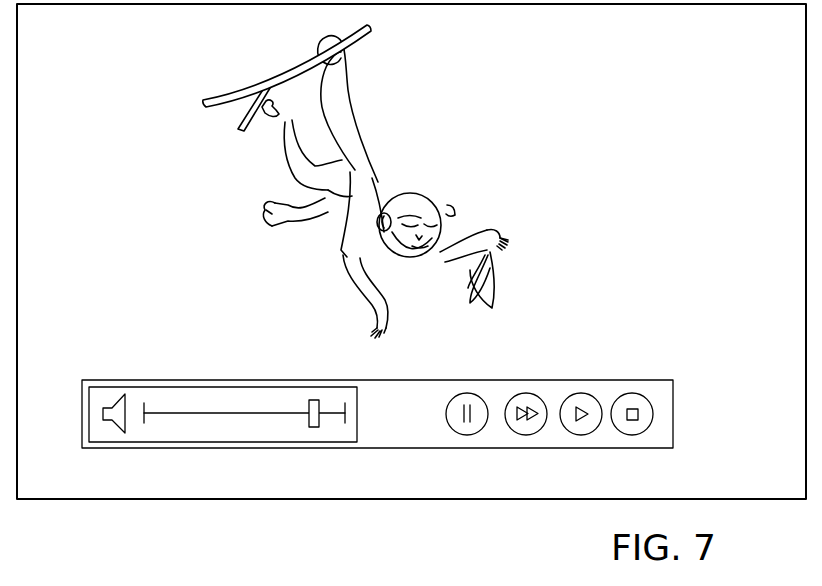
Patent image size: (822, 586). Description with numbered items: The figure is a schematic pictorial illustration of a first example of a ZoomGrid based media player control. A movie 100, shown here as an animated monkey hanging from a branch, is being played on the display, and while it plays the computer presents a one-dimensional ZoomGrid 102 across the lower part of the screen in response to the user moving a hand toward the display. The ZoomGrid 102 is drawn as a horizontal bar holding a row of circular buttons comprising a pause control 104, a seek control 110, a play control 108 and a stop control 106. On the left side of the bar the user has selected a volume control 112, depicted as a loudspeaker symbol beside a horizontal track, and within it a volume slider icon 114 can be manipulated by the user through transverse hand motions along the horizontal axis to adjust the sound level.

The movie 100 is at (561, 131).
The one-dimensional ZoomGrid 102 is at (674, 414).
The pause control 104 is at (457, 393).
The stop control 106 is at (622, 393).
The play control 108 is at (572, 393).
The seek control 110 is at (518, 393).
The volume control 112 is at (105, 387).
The volume slider icon 114 is at (312, 400).